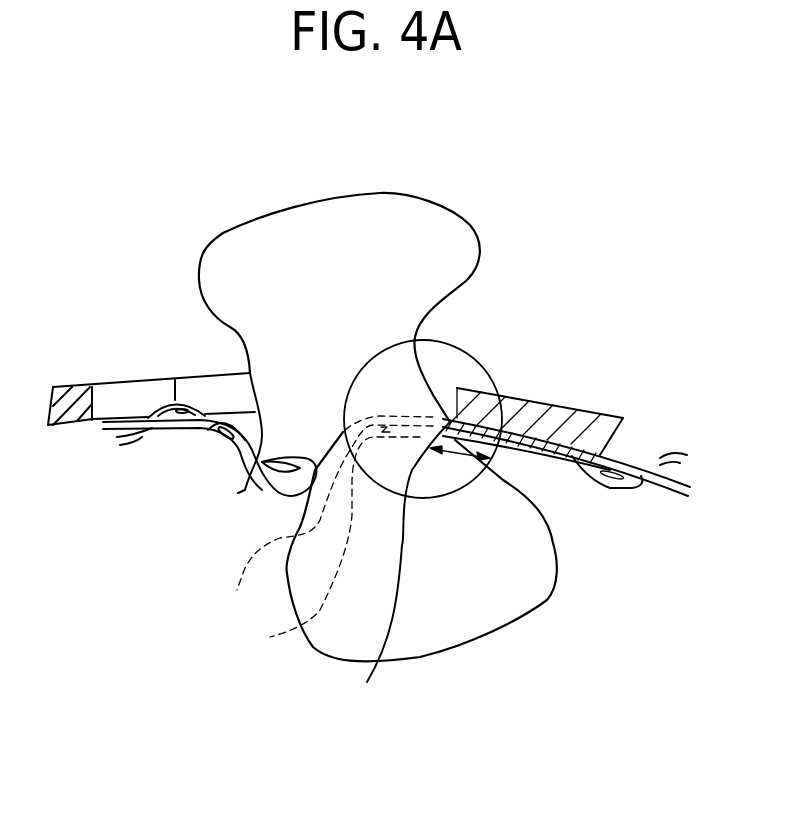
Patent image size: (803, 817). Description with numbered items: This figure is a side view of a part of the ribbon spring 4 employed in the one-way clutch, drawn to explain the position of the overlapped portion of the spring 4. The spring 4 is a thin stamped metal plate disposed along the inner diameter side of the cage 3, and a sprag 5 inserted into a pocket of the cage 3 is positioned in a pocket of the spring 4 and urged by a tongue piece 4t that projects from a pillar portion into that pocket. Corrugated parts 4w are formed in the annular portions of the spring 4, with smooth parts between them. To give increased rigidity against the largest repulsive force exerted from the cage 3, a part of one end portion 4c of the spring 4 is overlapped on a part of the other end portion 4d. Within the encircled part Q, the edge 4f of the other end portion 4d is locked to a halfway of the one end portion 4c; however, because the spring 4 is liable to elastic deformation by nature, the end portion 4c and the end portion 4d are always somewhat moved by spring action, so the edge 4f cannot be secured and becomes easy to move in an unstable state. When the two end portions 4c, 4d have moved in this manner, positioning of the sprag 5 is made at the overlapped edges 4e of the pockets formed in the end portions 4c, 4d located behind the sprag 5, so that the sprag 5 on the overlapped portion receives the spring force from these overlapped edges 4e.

The sprag 5 is at (470, 244).
The encircled part Q is at (470, 352).
The cage 3 is at (518, 398).
The spring 4 is at (634, 458).
The one end portion 4c is at (593, 420).
The other end portion 4d is at (660, 490).
The tongue piece 4t is at (245, 490).
The corrugated part 4w is at (324, 524).
The edge 4f is at (330, 547).
The overlapped edges 4e is at (397, 569).